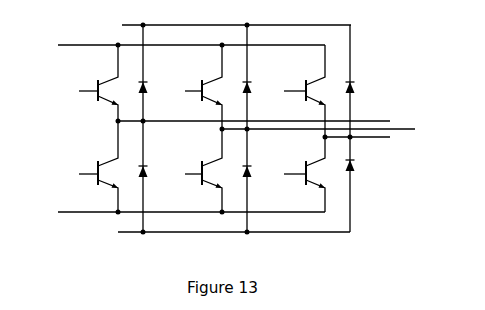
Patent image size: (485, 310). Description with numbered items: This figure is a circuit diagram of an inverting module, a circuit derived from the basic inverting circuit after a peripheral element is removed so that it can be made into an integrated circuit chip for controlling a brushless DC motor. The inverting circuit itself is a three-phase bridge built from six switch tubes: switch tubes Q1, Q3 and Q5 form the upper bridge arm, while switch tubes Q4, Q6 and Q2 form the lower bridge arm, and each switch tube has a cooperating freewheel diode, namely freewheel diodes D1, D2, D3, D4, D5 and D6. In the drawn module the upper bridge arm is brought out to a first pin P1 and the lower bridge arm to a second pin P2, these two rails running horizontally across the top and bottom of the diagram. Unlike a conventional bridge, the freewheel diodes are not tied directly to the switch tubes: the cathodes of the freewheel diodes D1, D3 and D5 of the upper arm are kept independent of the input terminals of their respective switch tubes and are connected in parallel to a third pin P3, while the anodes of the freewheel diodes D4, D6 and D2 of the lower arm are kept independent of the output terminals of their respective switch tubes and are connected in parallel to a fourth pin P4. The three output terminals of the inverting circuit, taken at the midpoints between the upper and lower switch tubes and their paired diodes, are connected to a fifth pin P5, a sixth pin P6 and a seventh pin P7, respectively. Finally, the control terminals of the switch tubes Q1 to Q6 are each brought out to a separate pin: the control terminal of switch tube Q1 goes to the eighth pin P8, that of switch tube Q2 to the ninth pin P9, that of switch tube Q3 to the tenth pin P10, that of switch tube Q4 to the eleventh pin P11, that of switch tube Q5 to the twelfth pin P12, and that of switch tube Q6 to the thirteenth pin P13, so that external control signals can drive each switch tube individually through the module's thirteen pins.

The first pin P1 is at (171, 47).
The second pin P2 is at (177, 213).
The third pin P3 is at (223, 24).
The fourth pin P4 is at (219, 234).
The fifth pin P5 is at (260, 112).
The sixth pin P6 is at (333, 129).
The seventh pin P7 is at (364, 147).
The eighth pin P8 is at (75, 93).
The ninth pin P9 is at (293, 182).
The tenth pin P10 is at (189, 102).
The eleventh pin P11 is at (72, 179).
The twelfth pin P12 is at (292, 101).
The thirteenth pin P13 is at (188, 182).
The switch tube Q1 is at (96, 83).
The switch tube Q2 is at (303, 174).
The switch tube Q3 is at (199, 87).
The switch tube Q4 is at (96, 166).
The switch tube Q5 is at (303, 91).
The switch tube Q6 is at (201, 170).
The freewheel diode D1 is at (153, 73).
The freewheel diode D2 is at (359, 184).
The freewheel diode D3 is at (256, 77).
The freewheel diode D4 is at (153, 176).
The freewheel diode D5 is at (360, 81).
The freewheel diode D6 is at (257, 180).